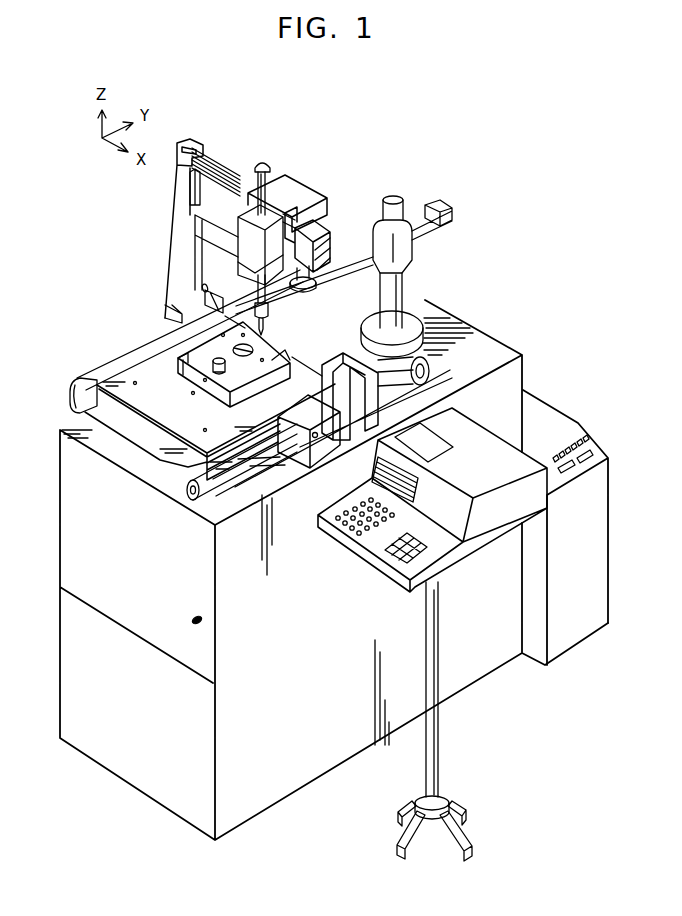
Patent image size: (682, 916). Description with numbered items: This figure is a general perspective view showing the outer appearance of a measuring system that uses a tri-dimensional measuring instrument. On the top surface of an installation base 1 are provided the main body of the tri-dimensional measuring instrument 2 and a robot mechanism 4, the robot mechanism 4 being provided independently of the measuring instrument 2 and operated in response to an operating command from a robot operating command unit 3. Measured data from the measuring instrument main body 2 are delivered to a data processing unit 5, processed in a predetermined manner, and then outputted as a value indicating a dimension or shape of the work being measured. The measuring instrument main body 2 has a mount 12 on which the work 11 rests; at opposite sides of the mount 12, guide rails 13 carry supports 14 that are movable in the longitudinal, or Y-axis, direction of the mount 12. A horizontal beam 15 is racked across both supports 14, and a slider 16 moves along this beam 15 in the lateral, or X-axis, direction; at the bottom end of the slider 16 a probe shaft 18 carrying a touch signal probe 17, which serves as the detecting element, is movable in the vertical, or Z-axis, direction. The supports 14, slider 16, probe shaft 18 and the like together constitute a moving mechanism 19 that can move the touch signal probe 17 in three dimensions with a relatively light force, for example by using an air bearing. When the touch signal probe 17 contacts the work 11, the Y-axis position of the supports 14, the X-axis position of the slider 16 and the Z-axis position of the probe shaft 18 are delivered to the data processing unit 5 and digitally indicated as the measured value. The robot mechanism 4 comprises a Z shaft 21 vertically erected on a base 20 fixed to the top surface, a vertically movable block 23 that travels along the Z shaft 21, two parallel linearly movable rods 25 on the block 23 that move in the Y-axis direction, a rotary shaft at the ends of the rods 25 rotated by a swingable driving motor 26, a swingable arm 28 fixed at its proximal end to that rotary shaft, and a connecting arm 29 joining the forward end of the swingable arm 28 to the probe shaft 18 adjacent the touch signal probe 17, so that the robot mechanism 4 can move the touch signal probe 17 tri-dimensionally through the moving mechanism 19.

The installation base 1 is at (62, 672).
The main body of tri-dimensional measuring instrument 2 is at (103, 280).
The robot operating command unit 3 is at (277, 463).
The robot mechanism 4 is at (472, 261).
The data processing unit 5 is at (492, 535).
The work 11 is at (207, 373).
The mount 12 is at (132, 375).
The guide rails 13 is at (140, 350).
The supports 14 is at (173, 267).
The horizontal beam 15 is at (332, 245).
The slider 16 is at (294, 192).
The touch signal probe 17 is at (280, 334).
The probe shaft 18 is at (262, 161).
The moving mechanism 19 is at (176, 236).
The base 20 is at (420, 318).
The Z shaft 21 is at (400, 294).
The vertically movable block 23 is at (414, 246).
The linearly movable rods 25 is at (412, 217).
The swingable driving motor 26 is at (320, 293).
The swingable arm 28 is at (312, 303).
The connecting arm 29 is at (270, 305).